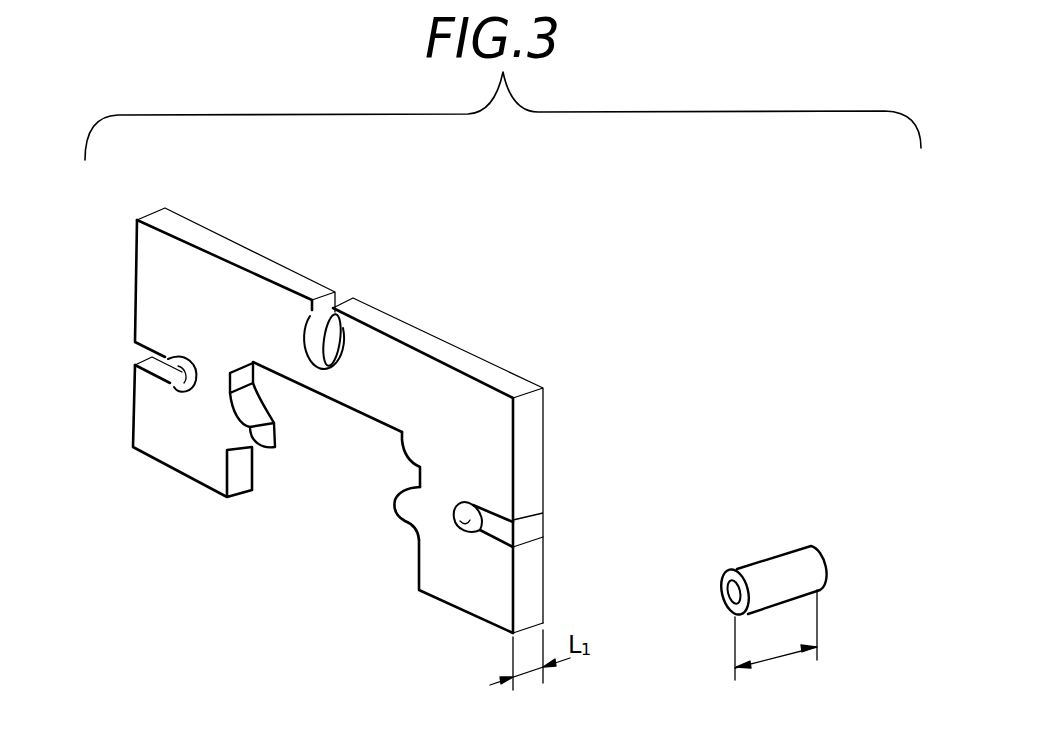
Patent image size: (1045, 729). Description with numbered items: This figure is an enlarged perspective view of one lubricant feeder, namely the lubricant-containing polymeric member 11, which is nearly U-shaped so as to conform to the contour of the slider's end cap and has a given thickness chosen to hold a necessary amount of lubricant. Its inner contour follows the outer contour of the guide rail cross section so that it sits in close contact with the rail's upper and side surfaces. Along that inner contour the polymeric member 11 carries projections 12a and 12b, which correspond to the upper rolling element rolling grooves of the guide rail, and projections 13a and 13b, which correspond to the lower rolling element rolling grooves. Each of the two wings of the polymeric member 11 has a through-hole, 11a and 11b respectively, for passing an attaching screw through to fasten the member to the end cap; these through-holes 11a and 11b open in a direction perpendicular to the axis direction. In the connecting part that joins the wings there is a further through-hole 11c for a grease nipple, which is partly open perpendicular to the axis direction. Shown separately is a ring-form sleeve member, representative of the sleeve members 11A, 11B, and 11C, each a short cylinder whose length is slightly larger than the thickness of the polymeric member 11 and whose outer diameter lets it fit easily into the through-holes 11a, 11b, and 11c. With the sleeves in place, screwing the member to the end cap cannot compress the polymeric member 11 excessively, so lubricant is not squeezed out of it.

The polymeric member 11 is at (373, 453).
The through-hole 11a is at (457, 528).
The through-hole 11b is at (182, 393).
The through-hole 11c is at (317, 357).
The projection 12a is at (272, 392).
The projection 12b is at (417, 455).
The projection 13a is at (268, 452).
The projection 13b is at (390, 508).
The ring-form sleeve member 11A is at (801, 578).
The ring-form sleeve member 11B is at (801, 578).
The ring-form sleeve member 11C is at (827, 558).